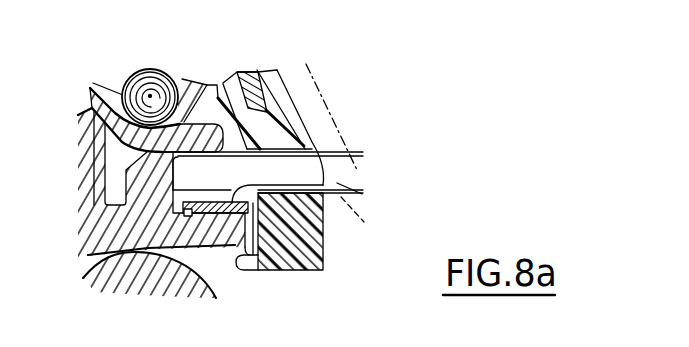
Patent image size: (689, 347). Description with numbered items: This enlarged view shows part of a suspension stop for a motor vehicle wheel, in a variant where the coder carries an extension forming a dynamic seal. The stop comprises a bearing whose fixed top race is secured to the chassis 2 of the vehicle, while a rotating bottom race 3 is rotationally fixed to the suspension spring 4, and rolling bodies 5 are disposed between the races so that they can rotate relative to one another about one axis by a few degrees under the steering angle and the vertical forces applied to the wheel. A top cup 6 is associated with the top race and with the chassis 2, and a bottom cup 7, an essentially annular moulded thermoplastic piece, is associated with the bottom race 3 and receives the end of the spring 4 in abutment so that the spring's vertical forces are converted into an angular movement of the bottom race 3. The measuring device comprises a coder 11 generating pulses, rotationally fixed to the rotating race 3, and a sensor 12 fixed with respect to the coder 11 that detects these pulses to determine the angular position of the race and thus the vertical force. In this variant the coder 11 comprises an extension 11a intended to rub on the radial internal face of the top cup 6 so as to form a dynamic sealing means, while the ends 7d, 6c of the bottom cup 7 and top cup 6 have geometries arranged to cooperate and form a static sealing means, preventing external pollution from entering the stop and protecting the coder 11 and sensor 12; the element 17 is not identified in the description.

The chassis 2 is at (313, 112).
The rotating bottom race 3 is at (103, 108).
The suspension spring 4 is at (170, 266).
The rolling bodies 5 is at (150, 93).
The top cup 6 is at (284, 104).
The end of the top cup 6c is at (257, 270).
The bottom cup 7 is at (130, 226).
The end of the bottom cup 7d is at (243, 248).
The coder 11 is at (340, 191).
The extension of the coder 11a is at (278, 217).
The sensor 12 is at (312, 153).
The seal strip 17 is at (186, 212).